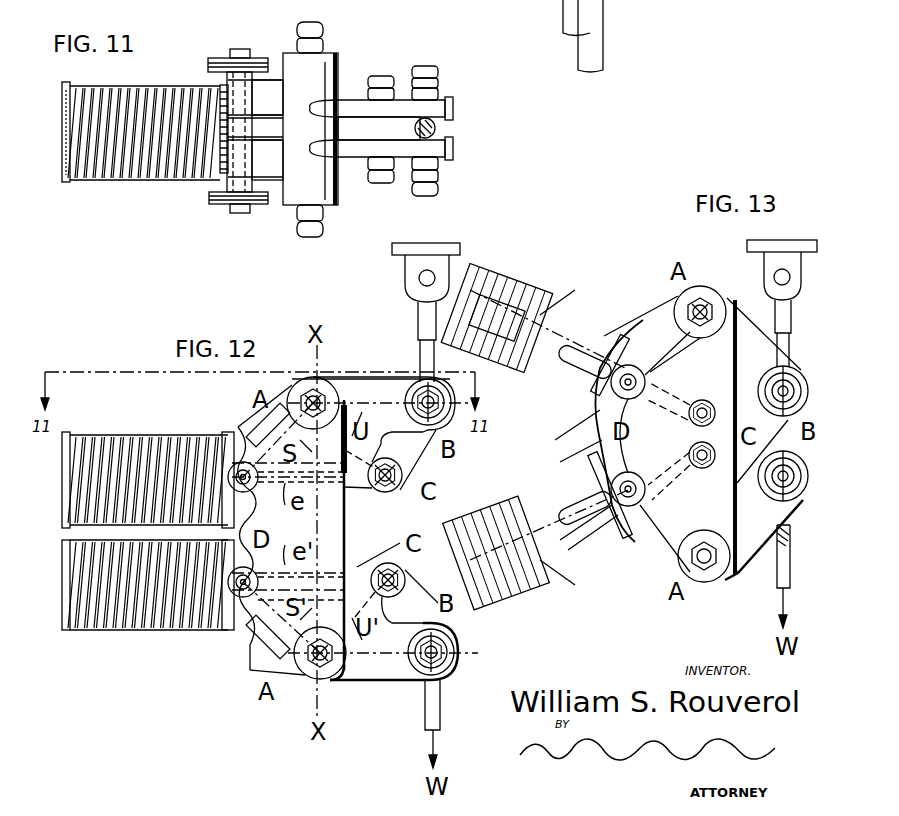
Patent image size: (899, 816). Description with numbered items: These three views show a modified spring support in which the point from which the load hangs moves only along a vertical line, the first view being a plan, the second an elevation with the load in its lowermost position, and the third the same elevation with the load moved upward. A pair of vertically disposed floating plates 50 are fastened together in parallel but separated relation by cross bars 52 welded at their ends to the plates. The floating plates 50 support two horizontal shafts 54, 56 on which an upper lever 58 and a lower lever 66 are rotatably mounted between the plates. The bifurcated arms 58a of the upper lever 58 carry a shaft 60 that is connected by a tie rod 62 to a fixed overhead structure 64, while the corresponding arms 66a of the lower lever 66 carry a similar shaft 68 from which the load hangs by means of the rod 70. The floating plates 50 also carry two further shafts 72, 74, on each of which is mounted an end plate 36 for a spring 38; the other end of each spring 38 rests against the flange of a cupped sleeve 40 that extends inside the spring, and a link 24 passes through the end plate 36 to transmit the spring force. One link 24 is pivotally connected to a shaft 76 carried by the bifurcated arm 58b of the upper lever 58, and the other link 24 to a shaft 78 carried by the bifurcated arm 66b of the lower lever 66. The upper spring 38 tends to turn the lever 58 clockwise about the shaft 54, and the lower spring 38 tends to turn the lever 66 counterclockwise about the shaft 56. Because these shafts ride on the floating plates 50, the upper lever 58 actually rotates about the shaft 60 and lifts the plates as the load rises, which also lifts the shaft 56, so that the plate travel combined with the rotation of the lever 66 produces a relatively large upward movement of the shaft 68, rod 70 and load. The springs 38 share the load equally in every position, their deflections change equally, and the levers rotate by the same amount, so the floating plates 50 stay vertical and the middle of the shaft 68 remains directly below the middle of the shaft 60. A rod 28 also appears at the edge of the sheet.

In FIG. 11, the link 24 is at (345, 192).
In FIG. 12, the link 24 is at (372, 484).
In FIG. 13, the link 24 is at (561, 457).
In FIG. 13, the rod 28 is at (603, 8).
In FIG. 11, the end plate 36 is at (222, 182).
In FIG. 12, the end plate 36 is at (225, 435).
In FIG. 13, the end plate 36 is at (612, 530).
In FIG. 11, the spring 38 is at (138, 86).
In FIG. 12, the spring 38 is at (95, 435).
In FIG. 13, the spring 38 is at (505, 510).
In FIG. 13, the cupped sleeve 40 is at (530, 305).
In FIG. 11, the floating plates 50 is at (210, 60).
In FIG. 12, the floating plates 50 is at (245, 630).
In FIG. 13, the floating plates 50 is at (670, 312).
In FIG. 11, the cross bars 52 is at (268, 58).
In FIG. 12, the cross bars 52 is at (262, 430).
In FIG. 13, the cross bars 52 is at (640, 545).
In FIG. 11, the shaft 54 is at (312, 22).
In FIG. 12, the shaft 54 is at (322, 395).
In FIG. 13, the shaft 54 is at (690, 312).
In FIG. 12, the shaft 56 is at (335, 675).
In FIG. 13, the shaft 56 is at (702, 566).
In FIG. 11, the upper lever 58 is at (330, 80).
In FIG. 12, the upper lever 58 is at (305, 380).
In FIG. 11, the bifurcated arms of upper lever 58a is at (455, 103).
In FIG. 12, the bifurcated arms of upper lever 58a is at (372, 378).
In FIG. 13, the bifurcated arms of upper lever 58a is at (748, 315).
In FIG. 12, the bifurcated arm of upper lever 58b is at (404, 460).
In FIG. 13, the bifurcated arm of upper lever 58b is at (670, 355).
In FIG. 11, the shaft 60 is at (428, 66).
In FIG. 12, the shaft 60 is at (441, 420).
In FIG. 13, the shaft 60 is at (796, 375).
In FIG. 11, the tie rod 62 is at (435, 126).
In FIG. 12, the tie rod 62 is at (418, 312).
In FIG. 13, the tie rod 62 is at (791, 322).
In FIG. 12, the fixed overhead structure 64 is at (395, 268).
In FIG. 13, the fixed overhead structure 64 is at (764, 258).
In FIG. 12, the lower lever 66 is at (300, 680).
In FIG. 12, the arms of lower lever 66a is at (390, 682).
In FIG. 13, the arms of lower lever 66a is at (736, 570).
In FIG. 12, the bifurcated arm of lower lever 66b is at (410, 596).
In FIG. 13, the bifurcated arm of lower lever 66b is at (665, 536).
In FIG. 12, the shaft 68 is at (455, 655).
In FIG. 13, the shaft 68 is at (791, 498).
In FIG. 12, the rod 70 is at (440, 700).
In FIG. 13, the rod 70 is at (790, 552).
In FIG. 11, the shaft 72 is at (240, 49).
In FIG. 12, the shaft 72 is at (243, 462).
In FIG. 13, the shaft 72 is at (605, 440).
In FIG. 12, the shaft 74 is at (240, 600).
In FIG. 13, the shaft 74 is at (600, 490).
In FIG. 11, the shaft 76 is at (385, 76).
In FIG. 12, the shaft 76 is at (402, 478).
In FIG. 13, the shaft 76 is at (688, 420).
In FIG. 12, the shaft 78 is at (405, 578).
In FIG. 13, the shaft 78 is at (688, 452).